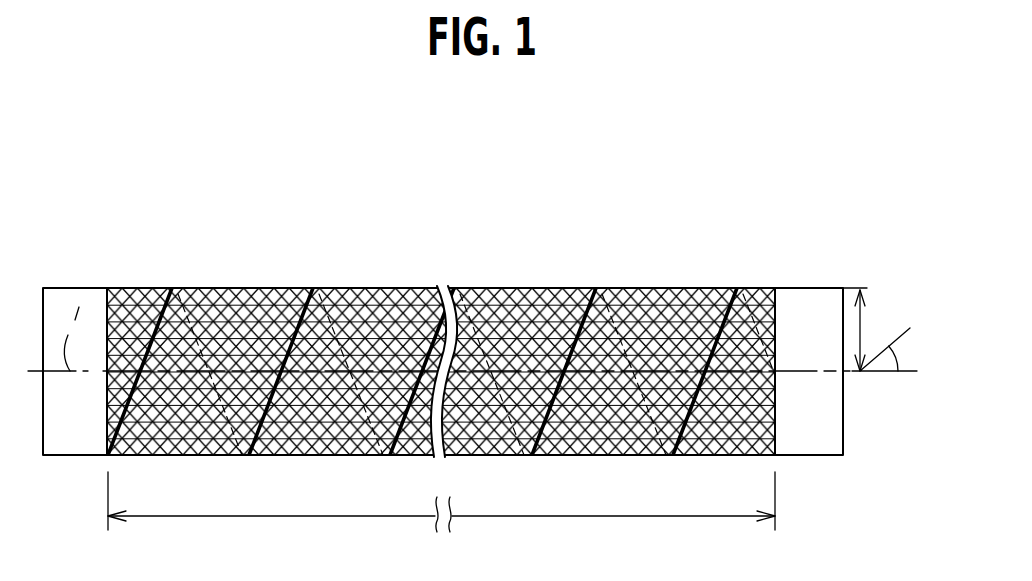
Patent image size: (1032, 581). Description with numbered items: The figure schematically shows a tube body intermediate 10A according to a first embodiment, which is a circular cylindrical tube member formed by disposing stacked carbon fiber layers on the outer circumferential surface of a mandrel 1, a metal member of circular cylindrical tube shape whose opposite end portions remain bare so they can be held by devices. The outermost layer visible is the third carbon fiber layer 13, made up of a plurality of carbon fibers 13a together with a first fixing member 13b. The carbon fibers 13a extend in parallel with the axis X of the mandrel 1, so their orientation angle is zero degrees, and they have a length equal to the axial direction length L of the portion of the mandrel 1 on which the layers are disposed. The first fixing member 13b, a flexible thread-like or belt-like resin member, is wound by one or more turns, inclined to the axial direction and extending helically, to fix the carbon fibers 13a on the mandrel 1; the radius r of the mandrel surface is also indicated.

The tube body intermediate 10A is at (439, 273).
The mandrel 1 is at (808, 291).
The third carbon fiber layer 13 is at (441, 311).
The carbon fibers 13a is at (476, 336).
The first fixing member 13b is at (170, 292).
The axis X is at (83, 295).
The axial direction length L is at (441, 523).
The radius r is at (860, 329).